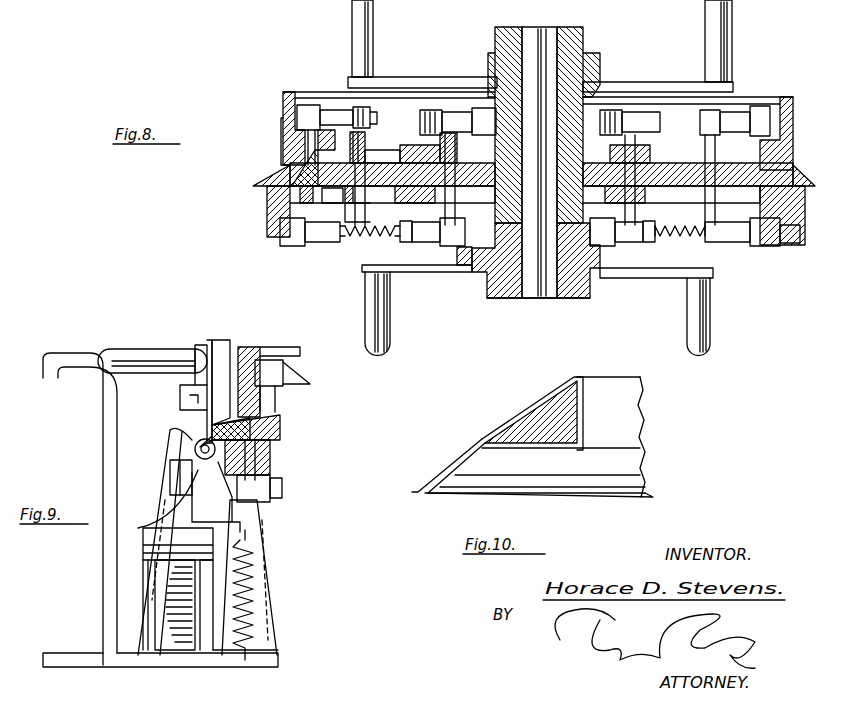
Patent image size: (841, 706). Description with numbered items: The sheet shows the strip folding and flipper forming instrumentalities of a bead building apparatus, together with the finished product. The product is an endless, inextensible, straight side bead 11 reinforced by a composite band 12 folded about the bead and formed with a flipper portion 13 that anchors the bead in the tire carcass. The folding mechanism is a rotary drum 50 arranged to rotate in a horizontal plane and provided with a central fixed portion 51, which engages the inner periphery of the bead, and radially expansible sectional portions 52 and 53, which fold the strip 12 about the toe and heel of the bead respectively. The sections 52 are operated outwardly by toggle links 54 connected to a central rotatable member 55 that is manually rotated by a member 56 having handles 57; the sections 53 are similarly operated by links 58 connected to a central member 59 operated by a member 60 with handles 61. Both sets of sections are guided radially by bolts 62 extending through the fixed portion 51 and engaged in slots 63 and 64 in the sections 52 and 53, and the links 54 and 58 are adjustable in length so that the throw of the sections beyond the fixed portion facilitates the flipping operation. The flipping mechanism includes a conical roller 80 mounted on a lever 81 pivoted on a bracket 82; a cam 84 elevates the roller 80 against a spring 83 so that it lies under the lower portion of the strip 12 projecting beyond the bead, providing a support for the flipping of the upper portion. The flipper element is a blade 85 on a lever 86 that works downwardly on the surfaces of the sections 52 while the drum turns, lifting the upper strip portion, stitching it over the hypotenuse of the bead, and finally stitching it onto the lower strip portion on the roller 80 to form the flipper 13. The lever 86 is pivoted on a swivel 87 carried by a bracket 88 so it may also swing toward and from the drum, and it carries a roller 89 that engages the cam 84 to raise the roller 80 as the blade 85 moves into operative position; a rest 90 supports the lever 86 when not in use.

In FIG. 8, the bead 11 is at (290, 172).
In FIG. 9, the bead 11 is at (228, 400).
In FIG. 10, the bead 11 is at (528, 418).
In FIG. 8, the composite band 12 is at (281, 126).
In FIG. 9, the composite band 12 is at (209, 378).
In FIG. 10, the composite band 12 is at (583, 407).
In FIG. 8, the flipper portion 13 is at (262, 186).
In FIG. 9, the flipper portion 13 is at (203, 439).
In FIG. 10, the flipper portion 13 is at (455, 473).
In FIG. 8, the rotary drum 50 is at (334, 91).
In FIG. 9, the rotary drum 50 is at (285, 349).
In FIG. 8, the central fixed portion 51 is at (300, 165).
In FIG. 9, the central fixed portion 51 is at (268, 432).
In FIG. 8, the sectional portions 52 is at (283, 106).
In FIG. 9, the sectional portions 52 is at (248, 346).
In FIG. 8, the sectional portions 53 is at (268, 201).
In FIG. 9, the sectional portions 53 is at (272, 462).
In FIG. 8, the toggle links 54 is at (437, 106).
In FIG. 9, the toggle links 54 is at (295, 372).
In FIG. 8, the central rotatable member 55 is at (592, 64).
In FIG. 8, the member 56 is at (440, 80).
In FIG. 8, the handles 57 is at (369, 32).
In FIG. 8, the links 58 is at (370, 242).
In FIG. 9, the links 58 is at (283, 490).
In FIG. 8, the central member 59 is at (505, 300).
In FIG. 8, the member 60 is at (446, 273).
In FIG. 8, the handles 61 is at (386, 336).
In FIG. 8, the bolts 62 is at (364, 150).
In FIG. 8, the slots 63 is at (332, 212).
In FIG. 8, the slots 64 is at (422, 150).
In FIG. 9, the conical roller 80 is at (240, 508).
In FIG. 9, the lever 81 is at (217, 570).
In FIG. 9, the bracket 82 is at (170, 620).
In FIG. 9, the spring 83 is at (256, 599).
In FIG. 9, the cam 84 is at (170, 496).
In FIG. 9, the blade 85 is at (203, 396).
In FIG. 9, the lever 86 is at (124, 354).
In FIG. 9, the swivel 87 is at (185, 401).
In FIG. 9, the bracket 88 is at (260, 567).
In FIG. 9, the roller 89 is at (195, 447).
In FIG. 9, the rest 90 is at (104, 436).